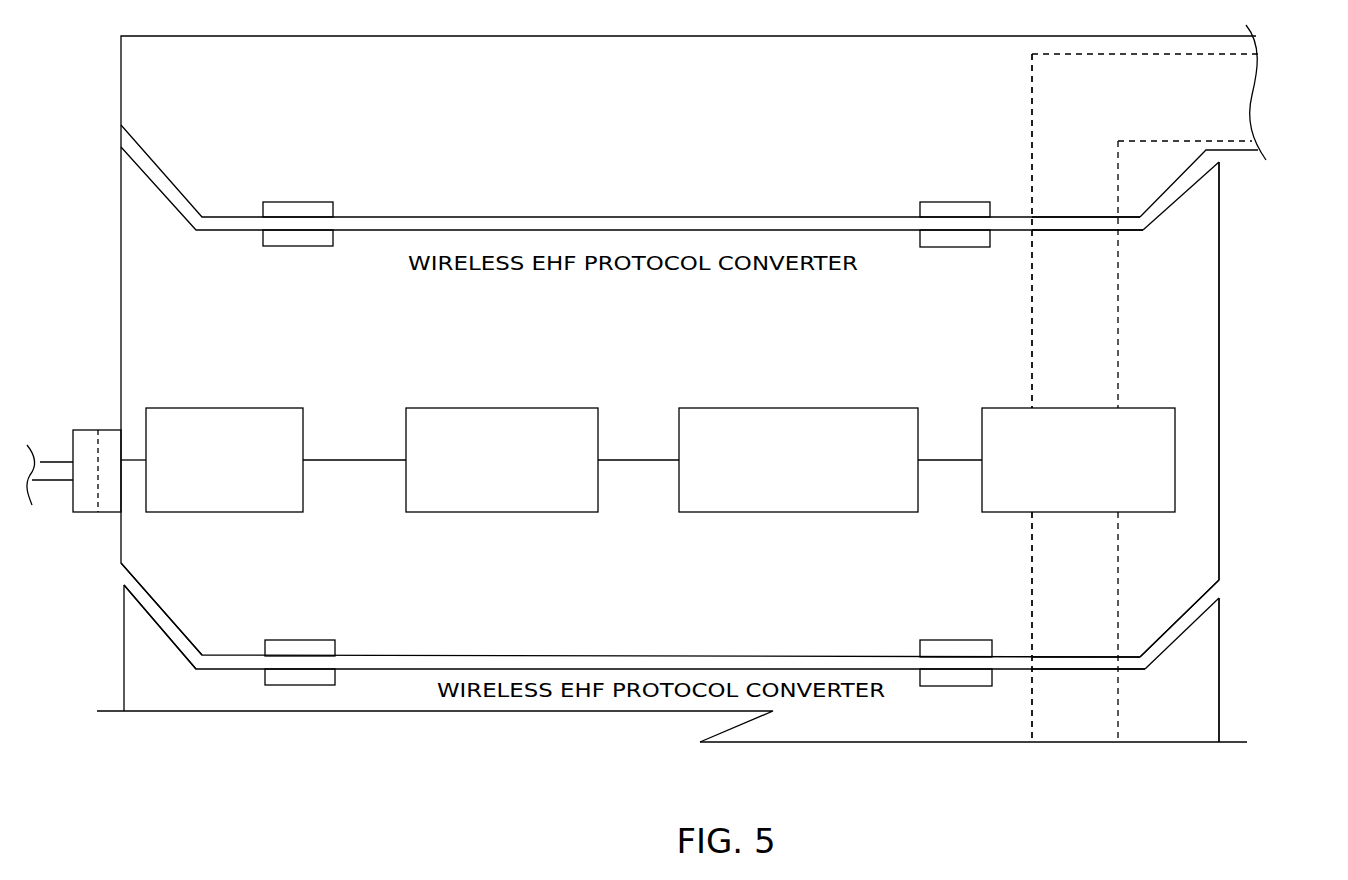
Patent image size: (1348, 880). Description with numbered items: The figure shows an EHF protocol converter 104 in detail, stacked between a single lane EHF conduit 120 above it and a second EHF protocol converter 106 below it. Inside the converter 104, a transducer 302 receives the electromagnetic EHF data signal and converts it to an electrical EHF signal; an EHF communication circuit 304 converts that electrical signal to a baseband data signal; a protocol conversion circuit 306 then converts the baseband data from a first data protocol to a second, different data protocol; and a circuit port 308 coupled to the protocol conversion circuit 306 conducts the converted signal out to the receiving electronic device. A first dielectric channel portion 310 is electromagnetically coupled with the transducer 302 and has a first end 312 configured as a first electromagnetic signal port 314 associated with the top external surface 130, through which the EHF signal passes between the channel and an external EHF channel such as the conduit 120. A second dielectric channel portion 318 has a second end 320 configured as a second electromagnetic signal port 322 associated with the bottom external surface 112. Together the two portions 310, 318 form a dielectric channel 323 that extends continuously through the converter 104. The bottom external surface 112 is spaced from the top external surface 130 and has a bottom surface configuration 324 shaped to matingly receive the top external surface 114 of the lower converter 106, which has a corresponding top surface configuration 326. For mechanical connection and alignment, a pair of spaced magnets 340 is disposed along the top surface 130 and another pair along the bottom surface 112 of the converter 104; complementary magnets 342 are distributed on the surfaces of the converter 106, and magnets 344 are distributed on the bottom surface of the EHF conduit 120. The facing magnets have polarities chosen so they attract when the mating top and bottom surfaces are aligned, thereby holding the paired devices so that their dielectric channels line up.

The EHF protocol converter 104 is at (1220, 483).
The EHF protocol converter 106 is at (1220, 672).
The bottom external surface 112 is at (130, 600).
The top external surface 114 is at (1175, 628).
The EHF conduit 120 is at (120, 80).
The top external surface 130 is at (1203, 152).
The transducer 302 is at (1000, 515).
The EHF communication circuit 304 is at (840, 515).
The protocol conversion circuit 306 is at (523, 515).
The circuit port 308 is at (277, 515).
The first dielectric channel portion 310 is at (1120, 375).
The first end 312 is at (1045, 233).
The first electromagnetic signal port 314 is at (1072, 230).
The second dielectric channel portion 318 is at (1120, 545).
The second end 320 is at (1068, 657).
The second electromagnetic signal port 322 is at (1090, 669).
The dielectric channel 323 is at (1030, 348).
The bottom surface configuration 324 is at (217, 215).
The top surface configuration 326 is at (222, 233).
The magnets 340 is at (313, 247).
The complementary magnets 342 is at (318, 686).
The magnets 344 is at (315, 202).